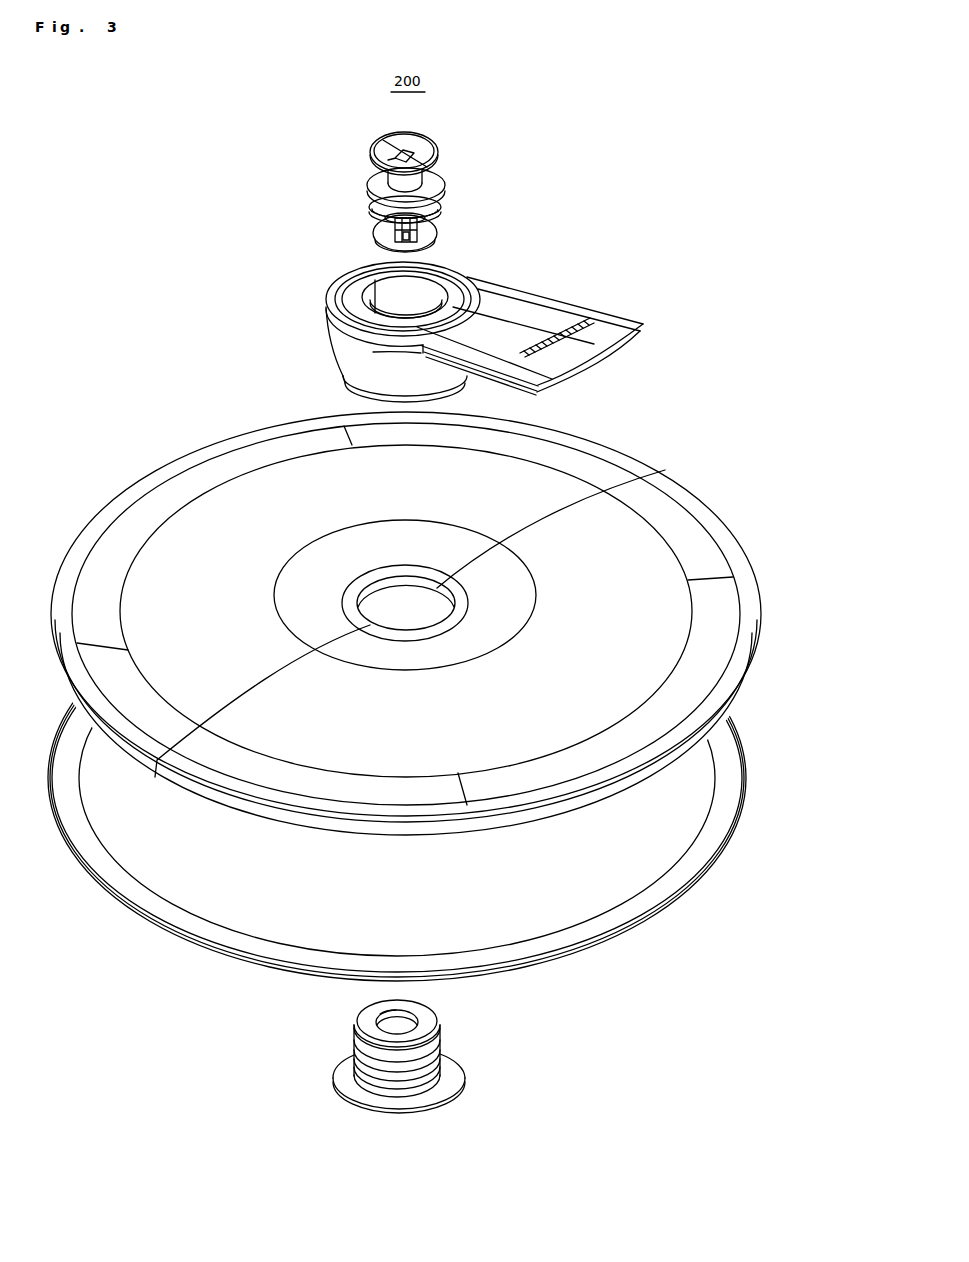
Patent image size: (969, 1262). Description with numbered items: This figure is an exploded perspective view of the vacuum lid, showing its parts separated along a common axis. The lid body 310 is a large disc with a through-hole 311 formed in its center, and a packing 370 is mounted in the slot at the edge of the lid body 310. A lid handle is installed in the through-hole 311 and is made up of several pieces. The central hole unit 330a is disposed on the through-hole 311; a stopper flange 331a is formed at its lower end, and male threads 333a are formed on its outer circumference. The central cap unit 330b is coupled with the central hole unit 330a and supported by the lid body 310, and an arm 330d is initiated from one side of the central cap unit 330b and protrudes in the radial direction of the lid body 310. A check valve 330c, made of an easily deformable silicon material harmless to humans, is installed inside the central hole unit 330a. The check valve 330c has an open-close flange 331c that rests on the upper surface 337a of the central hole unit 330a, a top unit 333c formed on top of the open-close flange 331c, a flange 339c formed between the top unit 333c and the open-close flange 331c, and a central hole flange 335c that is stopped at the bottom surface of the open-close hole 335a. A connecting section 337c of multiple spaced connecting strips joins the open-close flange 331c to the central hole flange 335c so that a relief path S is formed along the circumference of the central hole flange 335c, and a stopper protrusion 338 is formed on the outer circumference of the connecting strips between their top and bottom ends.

The lid body 310 is at (406, 623).
The through-hole 311 is at (427, 610).
The packing 370 is at (657, 895).
The central hole unit 330a is at (369, 1056).
The stopper flange 331a is at (462, 1078).
The male threads 333a is at (442, 1043).
The open-close hole 335a is at (398, 1025).
The upper surface of the central hole unit 337a is at (373, 1016).
The central cap unit 330b is at (428, 320).
The arm 330d is at (548, 315).
The check valve 330c is at (395, 186).
The open-close flange 331c is at (443, 207).
The top unit 333c is at (425, 135).
The central hole flange 335c is at (420, 230).
The connecting section 337c is at (395, 228).
The stopper protrusion 338 is at (387, 217).
The flange 339c is at (447, 178).
The relief path S is at (412, 240).